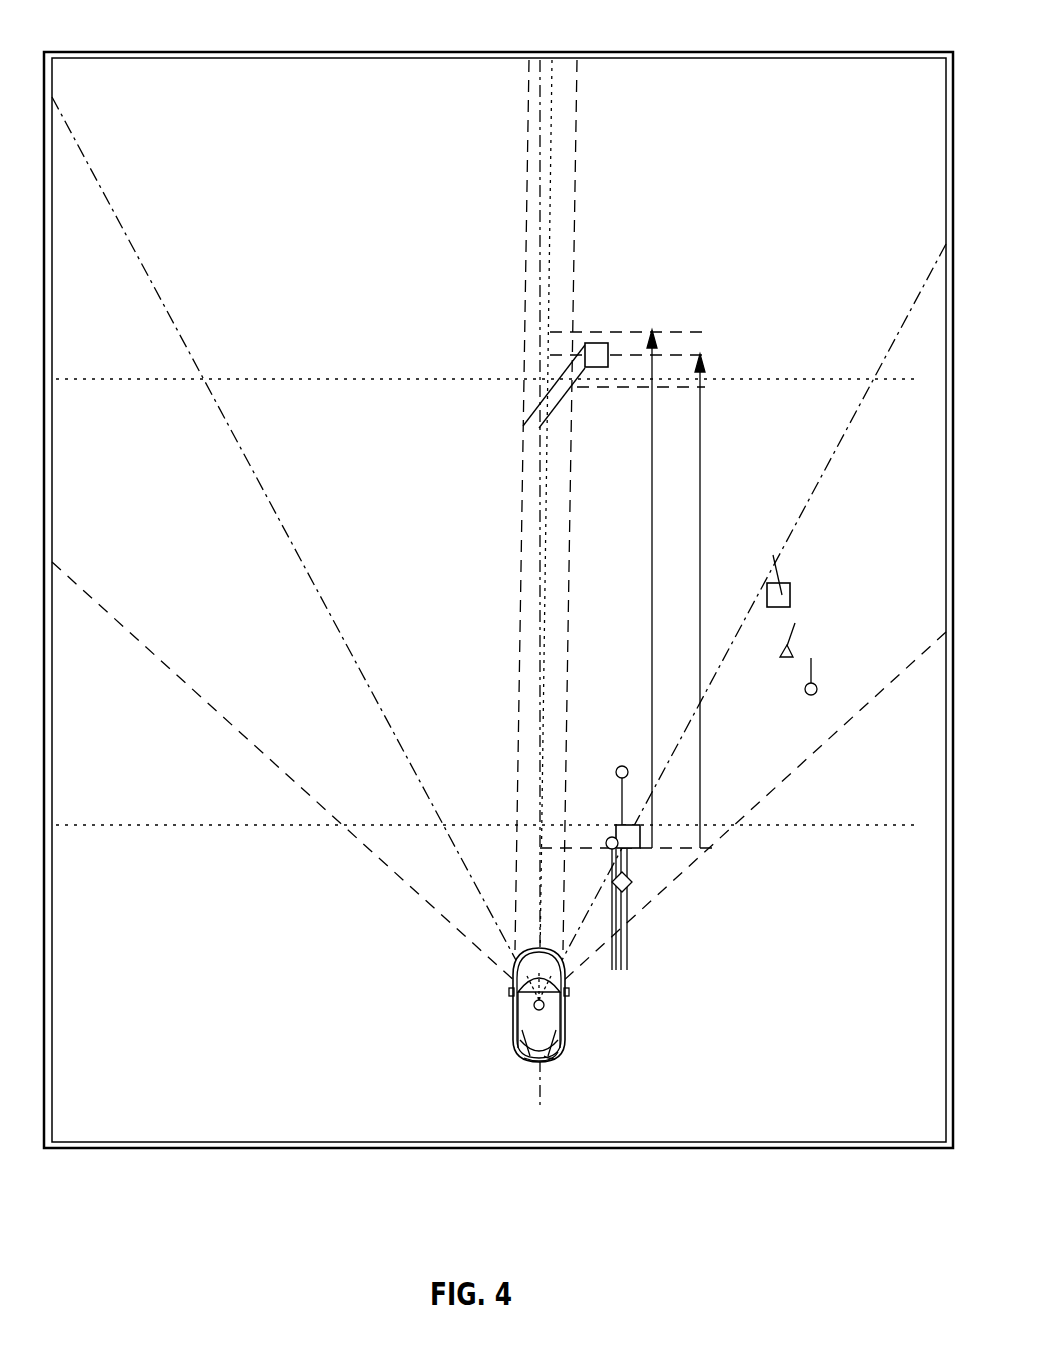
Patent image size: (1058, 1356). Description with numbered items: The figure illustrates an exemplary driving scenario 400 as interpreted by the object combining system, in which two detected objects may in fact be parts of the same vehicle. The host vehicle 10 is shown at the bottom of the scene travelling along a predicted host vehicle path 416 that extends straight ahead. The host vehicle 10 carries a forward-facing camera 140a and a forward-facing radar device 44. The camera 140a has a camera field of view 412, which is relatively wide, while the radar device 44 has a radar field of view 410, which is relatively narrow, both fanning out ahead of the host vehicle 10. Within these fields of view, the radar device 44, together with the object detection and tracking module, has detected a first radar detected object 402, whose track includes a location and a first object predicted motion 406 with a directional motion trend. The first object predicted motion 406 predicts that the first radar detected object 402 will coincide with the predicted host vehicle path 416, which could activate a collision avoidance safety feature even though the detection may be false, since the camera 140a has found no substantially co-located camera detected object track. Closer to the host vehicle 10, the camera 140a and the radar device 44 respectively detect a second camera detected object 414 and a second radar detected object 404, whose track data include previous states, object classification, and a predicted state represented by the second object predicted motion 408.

The driving scenario 400 is at (880, 34).
The host vehicle 10 is at (518, 1033).
The radar device 44 is at (530, 1057).
The camera 140a is at (548, 1057).
The first radar detected object 402 is at (598, 343).
The second radar detected object 404 is at (615, 832).
The first object predicted motion 406 is at (577, 380).
The second object predicted motion 408 is at (623, 938).
The radar field of view 410 is at (237, 446).
The camera field of view 412 is at (240, 731).
The second camera detected object 414 is at (608, 884).
The predicted host vehicle path 416 is at (550, 207).